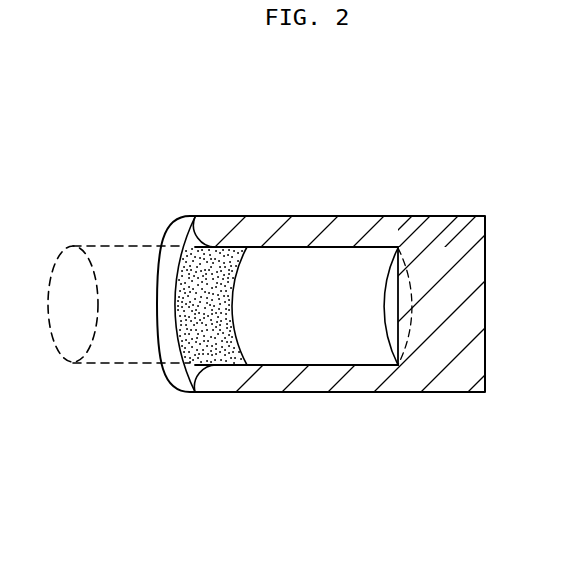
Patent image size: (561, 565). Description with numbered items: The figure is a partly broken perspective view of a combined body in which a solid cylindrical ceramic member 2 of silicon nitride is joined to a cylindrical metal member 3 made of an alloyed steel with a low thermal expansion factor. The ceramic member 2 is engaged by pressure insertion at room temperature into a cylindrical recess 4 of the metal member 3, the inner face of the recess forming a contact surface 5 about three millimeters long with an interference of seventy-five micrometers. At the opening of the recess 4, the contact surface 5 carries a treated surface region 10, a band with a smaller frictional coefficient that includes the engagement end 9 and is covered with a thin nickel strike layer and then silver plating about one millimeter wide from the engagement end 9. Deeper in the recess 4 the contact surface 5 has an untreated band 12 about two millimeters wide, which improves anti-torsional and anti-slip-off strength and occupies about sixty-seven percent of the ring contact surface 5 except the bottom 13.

The ceramic member 2 is at (124, 340).
The metal member 3 is at (460, 245).
The cylindrical recess 4 is at (333, 260).
The contact surface 5 is at (281, 346).
The engagement end 9 is at (223, 365).
The treated surface region 10 is at (212, 257).
The untreated band 12 is at (328, 343).
The bottom 13 is at (398, 363).